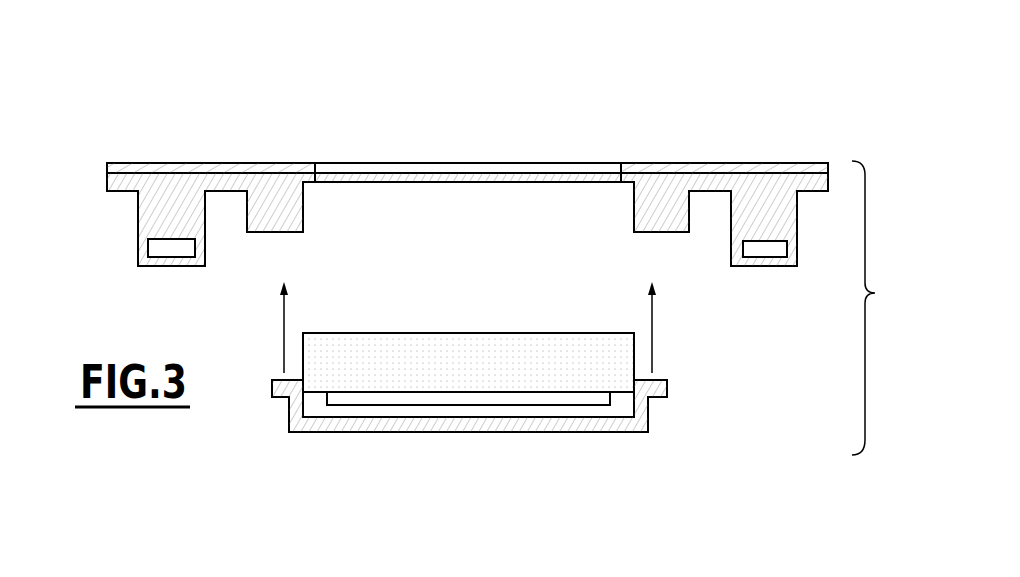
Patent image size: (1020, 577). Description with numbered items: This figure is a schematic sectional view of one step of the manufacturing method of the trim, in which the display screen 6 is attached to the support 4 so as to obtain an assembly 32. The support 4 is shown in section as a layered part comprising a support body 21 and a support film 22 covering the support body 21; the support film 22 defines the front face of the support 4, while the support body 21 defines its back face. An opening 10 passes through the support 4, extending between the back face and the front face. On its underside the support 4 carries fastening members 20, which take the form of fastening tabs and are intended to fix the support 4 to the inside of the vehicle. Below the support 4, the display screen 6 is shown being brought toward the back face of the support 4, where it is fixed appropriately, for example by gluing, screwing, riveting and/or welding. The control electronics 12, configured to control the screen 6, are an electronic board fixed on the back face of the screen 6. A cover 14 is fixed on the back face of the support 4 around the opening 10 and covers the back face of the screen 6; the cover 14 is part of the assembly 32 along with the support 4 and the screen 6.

The support 4 is at (424, 193).
The display screen 6 is at (487, 352).
The opening 10 is at (346, 178).
The control electronics 12 is at (450, 397).
The cover 14 is at (362, 423).
The fastening members 20 is at (148, 228).
The support body 21 is at (107, 181).
The support film 22 is at (106, 168).
The assembly 32 is at (882, 308).